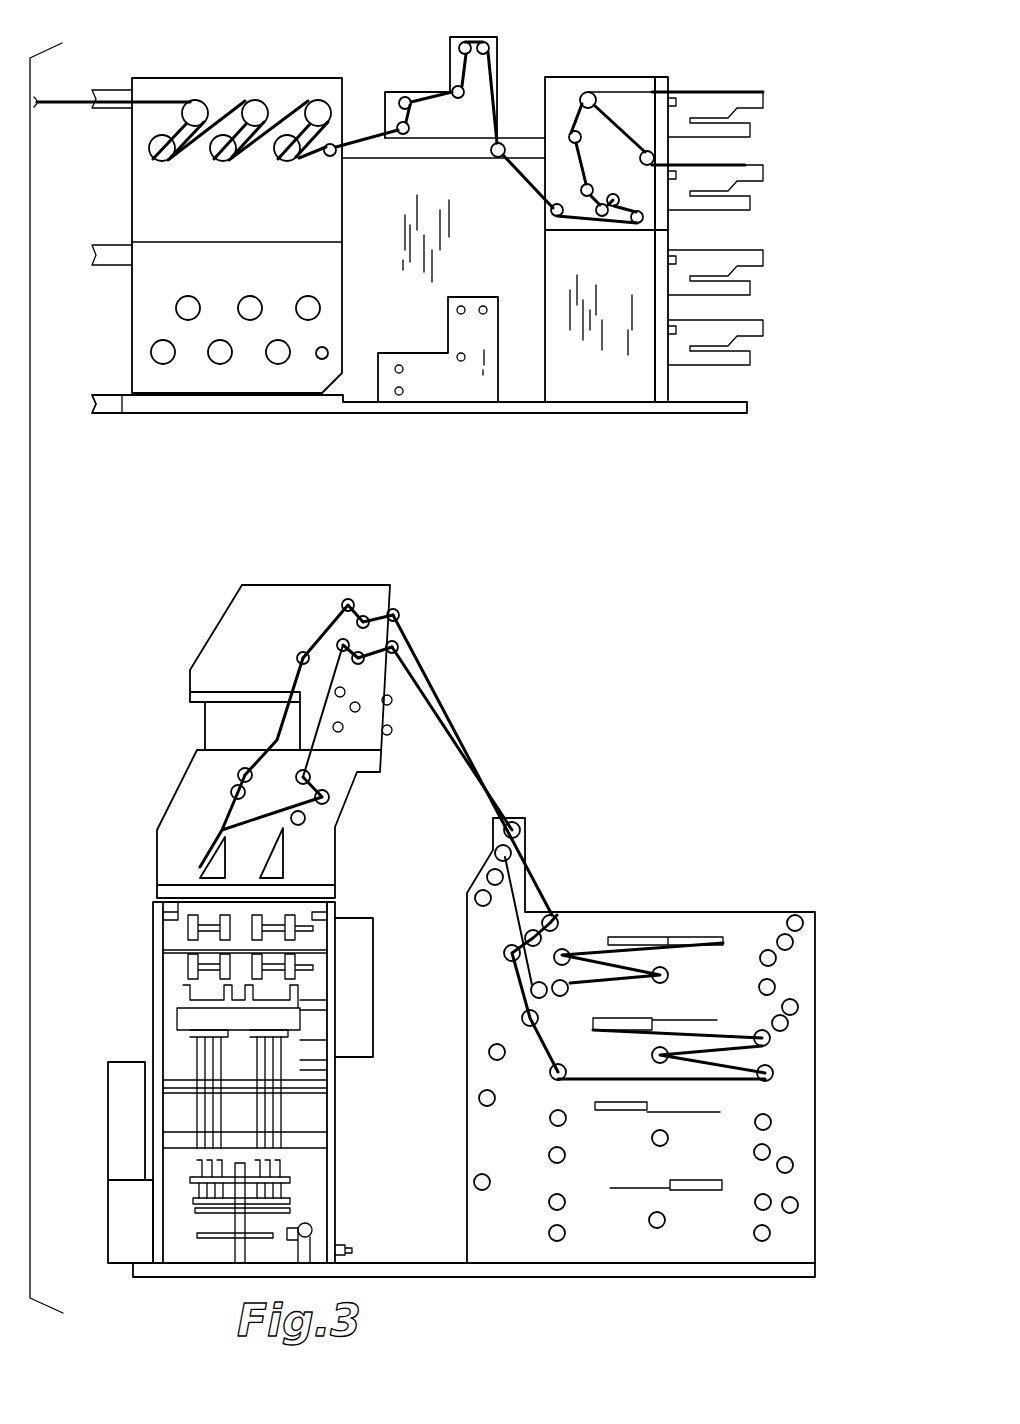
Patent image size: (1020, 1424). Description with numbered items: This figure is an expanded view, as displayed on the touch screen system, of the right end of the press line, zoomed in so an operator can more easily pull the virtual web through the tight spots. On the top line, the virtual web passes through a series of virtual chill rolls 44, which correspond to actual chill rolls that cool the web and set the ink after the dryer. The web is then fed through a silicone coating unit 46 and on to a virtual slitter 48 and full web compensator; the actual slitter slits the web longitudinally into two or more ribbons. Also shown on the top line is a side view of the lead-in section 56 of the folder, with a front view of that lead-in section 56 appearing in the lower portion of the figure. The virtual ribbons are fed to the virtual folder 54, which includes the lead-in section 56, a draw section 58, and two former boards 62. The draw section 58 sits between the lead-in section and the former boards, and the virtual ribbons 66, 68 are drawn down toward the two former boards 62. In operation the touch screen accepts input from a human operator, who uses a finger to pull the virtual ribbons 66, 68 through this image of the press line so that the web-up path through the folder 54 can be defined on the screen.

The virtual chill rolls 44 is at (197, 78).
The silicone coating unit 46 is at (466, 37).
The virtual slitter 48 is at (603, 77).
The lead-in section 56 is at (718, 92).
The draw section 58 is at (258, 585).
The virtual ribbons 66 is at (458, 730).
The virtual ribbons 68 is at (466, 765).
The former boards 62 is at (222, 858).
The virtual folder 54 is at (145, 912).